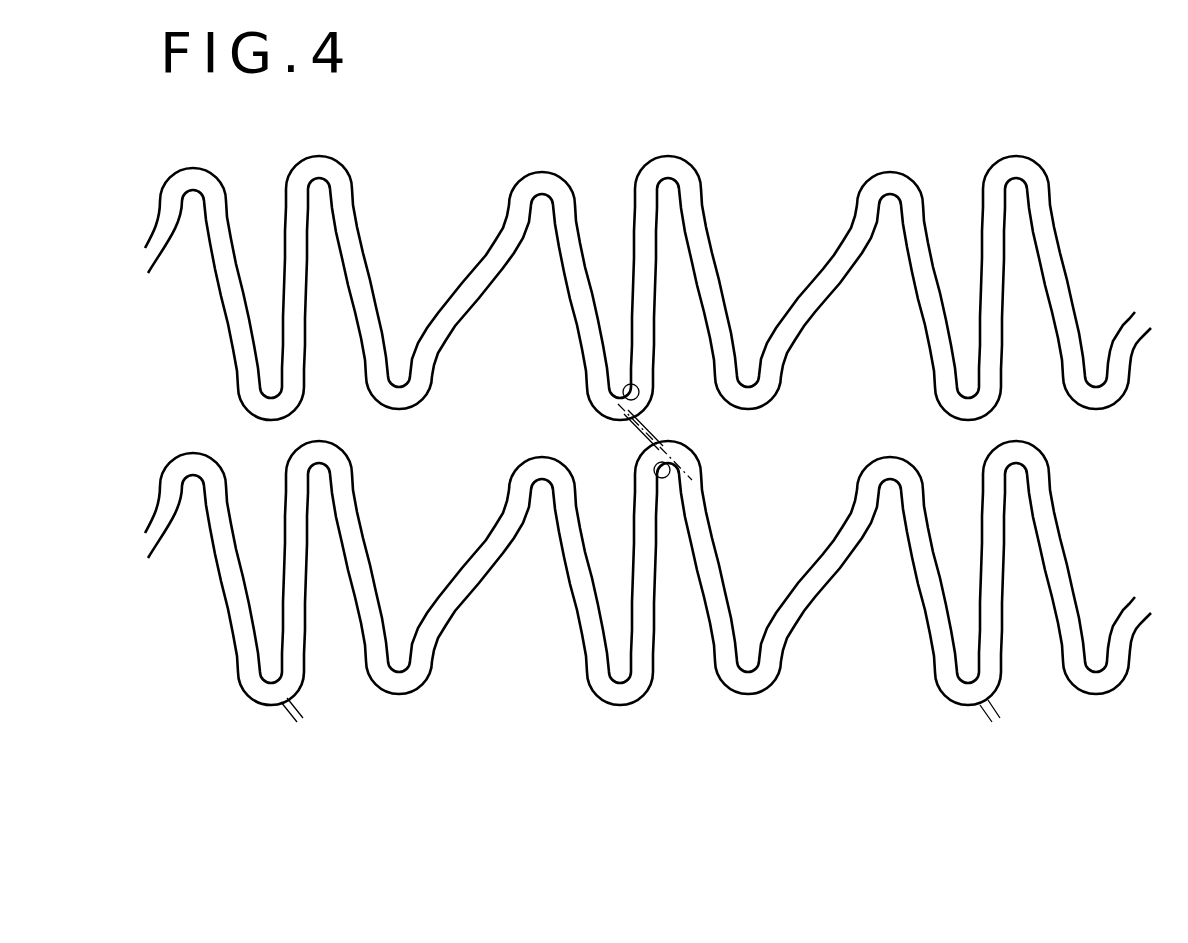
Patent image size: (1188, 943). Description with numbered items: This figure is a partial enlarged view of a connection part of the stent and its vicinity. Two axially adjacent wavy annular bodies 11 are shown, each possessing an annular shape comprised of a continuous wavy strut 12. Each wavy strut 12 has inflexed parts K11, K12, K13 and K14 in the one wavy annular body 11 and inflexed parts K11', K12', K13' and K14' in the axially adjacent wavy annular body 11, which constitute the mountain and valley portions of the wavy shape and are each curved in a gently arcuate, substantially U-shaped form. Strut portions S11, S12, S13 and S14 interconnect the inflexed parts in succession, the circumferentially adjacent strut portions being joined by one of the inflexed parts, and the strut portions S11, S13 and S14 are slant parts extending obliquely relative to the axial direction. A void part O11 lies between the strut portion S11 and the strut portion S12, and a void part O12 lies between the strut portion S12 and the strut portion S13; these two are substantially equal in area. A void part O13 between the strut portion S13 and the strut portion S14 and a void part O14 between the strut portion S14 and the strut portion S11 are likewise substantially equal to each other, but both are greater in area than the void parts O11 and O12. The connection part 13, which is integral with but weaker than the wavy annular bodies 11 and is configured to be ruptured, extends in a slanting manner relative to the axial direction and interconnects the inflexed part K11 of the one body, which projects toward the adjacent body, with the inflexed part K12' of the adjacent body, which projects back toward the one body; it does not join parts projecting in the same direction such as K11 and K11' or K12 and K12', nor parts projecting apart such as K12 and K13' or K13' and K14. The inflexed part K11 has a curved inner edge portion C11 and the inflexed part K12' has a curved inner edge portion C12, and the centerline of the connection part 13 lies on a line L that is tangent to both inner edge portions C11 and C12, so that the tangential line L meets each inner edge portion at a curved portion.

The wavy annular body 11 is at (607, 427).
The wavy strut 12 is at (613, 427).
The connection part 13 is at (653, 580).
The inflexed part K11 is at (619, 429).
The inflexed part K12 is at (667, 134).
The inflexed part K13 is at (747, 418).
The inflexed part K14 is at (541, 142).
The inflexed part K11' is at (619, 724).
The inflexed part K12' is at (667, 457).
The inflexed part K13' is at (747, 717).
The inflexed part K14' is at (541, 457).
The strut portion S11 is at (587, 427).
The strut portion S12 is at (643, 427).
The strut portion S13 is at (707, 427).
The strut portion S14 is at (653, 427).
The void part O11 is at (569, 423).
The void part O12 is at (724, 530).
The void part O13 is at (777, 424).
The void part O14 is at (868, 521).
The inner edge portion C11 is at (640, 396).
The inner edge portion C12 is at (655, 472).
The tangential line L is at (698, 474).